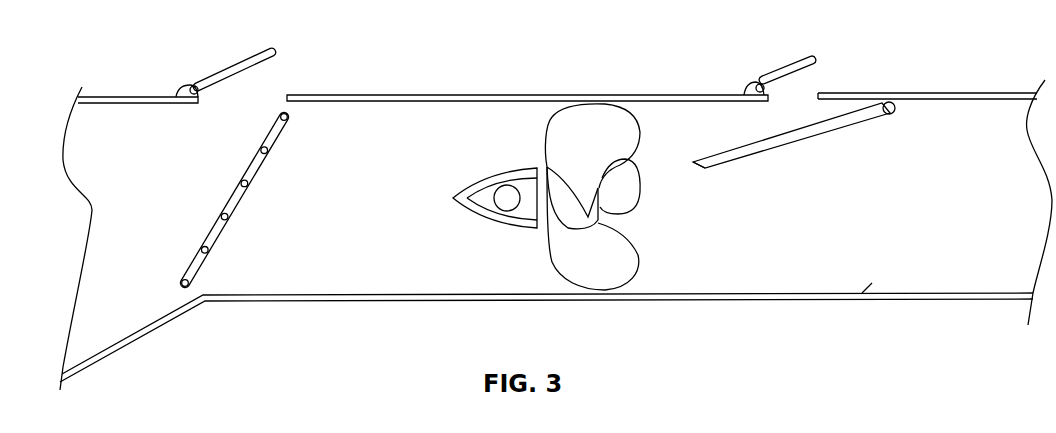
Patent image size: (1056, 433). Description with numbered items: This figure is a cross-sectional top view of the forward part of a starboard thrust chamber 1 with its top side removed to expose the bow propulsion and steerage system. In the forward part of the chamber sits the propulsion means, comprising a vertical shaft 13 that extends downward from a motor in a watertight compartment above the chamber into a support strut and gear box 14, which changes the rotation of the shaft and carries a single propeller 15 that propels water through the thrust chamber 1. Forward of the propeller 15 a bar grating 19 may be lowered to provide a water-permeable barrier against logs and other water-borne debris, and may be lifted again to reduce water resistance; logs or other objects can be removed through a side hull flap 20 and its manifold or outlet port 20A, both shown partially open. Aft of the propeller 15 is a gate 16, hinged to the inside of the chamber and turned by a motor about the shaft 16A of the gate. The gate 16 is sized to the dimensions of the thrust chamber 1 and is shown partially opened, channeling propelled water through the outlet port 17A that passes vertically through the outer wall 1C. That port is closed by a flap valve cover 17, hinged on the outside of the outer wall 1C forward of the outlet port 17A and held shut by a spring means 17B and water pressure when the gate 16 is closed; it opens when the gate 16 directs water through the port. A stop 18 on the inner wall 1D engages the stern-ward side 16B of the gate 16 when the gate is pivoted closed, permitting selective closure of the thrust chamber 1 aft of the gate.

The starboard thrust chamber 1 is at (423, 124).
The outer wall 1C is at (930, 92).
The inner wall 1D is at (725, 292).
The vertical shaft 13 is at (497, 209).
The support strut and gear box 14 is at (464, 184).
The propeller 15 is at (546, 149).
The gate 16 is at (802, 144).
The shaft of the gate 16A is at (896, 118).
The stern-ward side of the gate 16B is at (718, 168).
The flap valve cover 17 is at (777, 69).
The outlet port 17A is at (795, 95).
The spring means 17B is at (749, 97).
The stop 18 is at (874, 282).
The bar grating 19 is at (212, 226).
The side hull flap 20 is at (212, 71).
The manifold/outlet port 20A is at (258, 95).